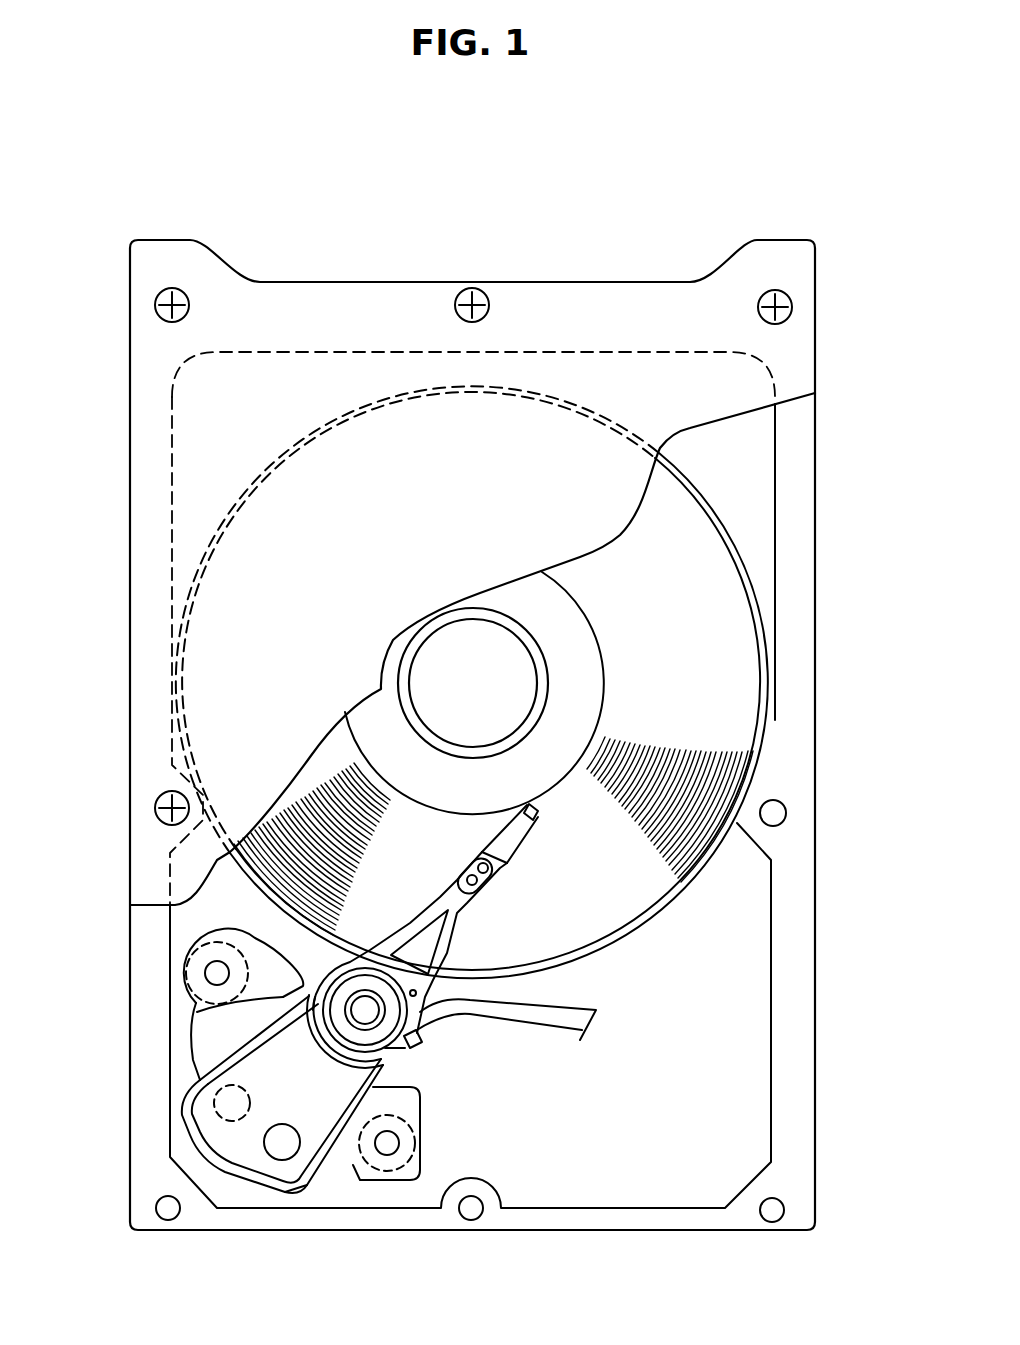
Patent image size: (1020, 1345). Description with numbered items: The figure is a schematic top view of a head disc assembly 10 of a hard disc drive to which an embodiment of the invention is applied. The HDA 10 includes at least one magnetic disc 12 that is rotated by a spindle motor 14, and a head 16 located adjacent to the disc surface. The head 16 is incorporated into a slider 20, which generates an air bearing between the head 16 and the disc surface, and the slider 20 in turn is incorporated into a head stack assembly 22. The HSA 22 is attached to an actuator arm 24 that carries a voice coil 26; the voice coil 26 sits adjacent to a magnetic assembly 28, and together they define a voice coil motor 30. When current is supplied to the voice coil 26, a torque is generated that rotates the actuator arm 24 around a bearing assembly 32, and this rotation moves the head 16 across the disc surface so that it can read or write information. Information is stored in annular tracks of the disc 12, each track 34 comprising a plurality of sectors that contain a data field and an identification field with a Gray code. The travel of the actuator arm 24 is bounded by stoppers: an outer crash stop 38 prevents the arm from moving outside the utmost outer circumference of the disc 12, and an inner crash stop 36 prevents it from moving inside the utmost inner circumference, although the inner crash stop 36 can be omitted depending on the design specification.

The head disc assembly 10 is at (613, 202).
The magnetic disc 12 is at (725, 618).
The spindle motor 14 is at (450, 660).
The head 16 is at (540, 813).
The slider 20 is at (517, 830).
The head stack assembly 22 is at (470, 925).
The actuator arm 24 is at (273, 1027).
The voice coil 26 is at (197, 1087).
The magnetic assembly 28 is at (217, 1037).
The voice coil motor 30 is at (333, 1163).
The bearing assembly 32 is at (373, 1020).
The track 34 is at (330, 803).
The inner crash stop 36 is at (420, 1150).
The outer crash stop 38 is at (190, 958).